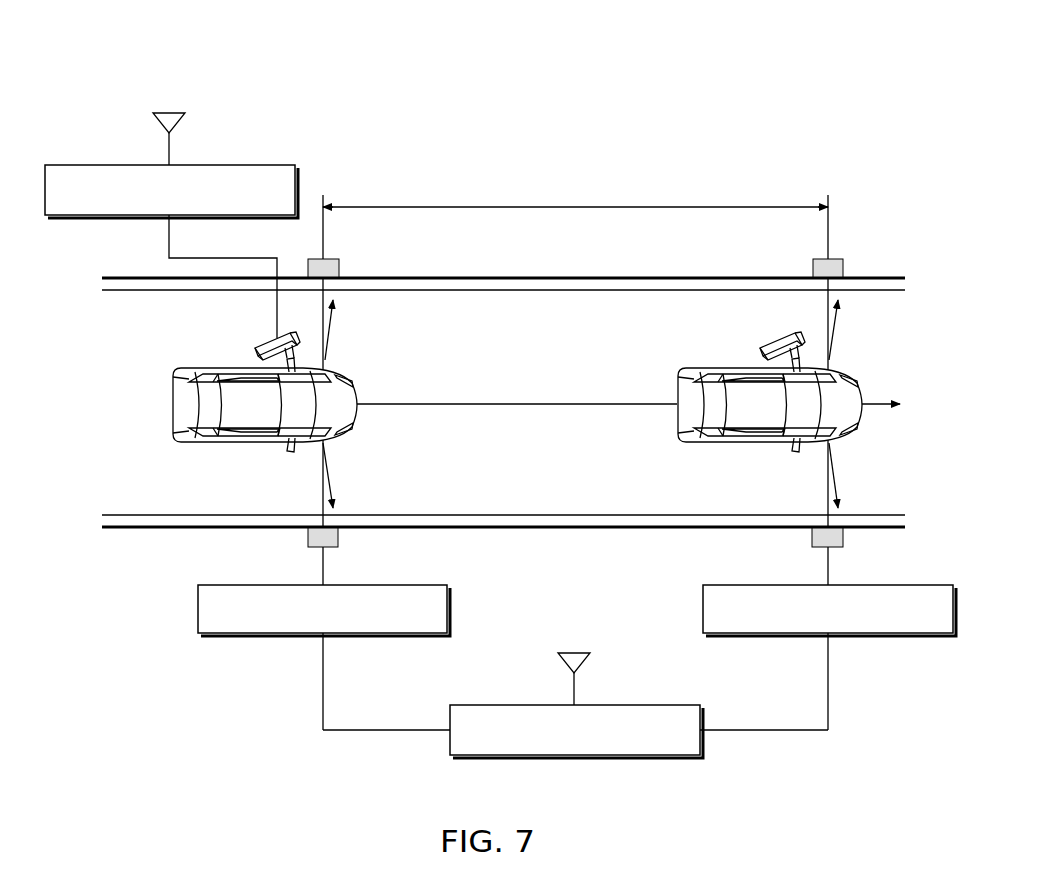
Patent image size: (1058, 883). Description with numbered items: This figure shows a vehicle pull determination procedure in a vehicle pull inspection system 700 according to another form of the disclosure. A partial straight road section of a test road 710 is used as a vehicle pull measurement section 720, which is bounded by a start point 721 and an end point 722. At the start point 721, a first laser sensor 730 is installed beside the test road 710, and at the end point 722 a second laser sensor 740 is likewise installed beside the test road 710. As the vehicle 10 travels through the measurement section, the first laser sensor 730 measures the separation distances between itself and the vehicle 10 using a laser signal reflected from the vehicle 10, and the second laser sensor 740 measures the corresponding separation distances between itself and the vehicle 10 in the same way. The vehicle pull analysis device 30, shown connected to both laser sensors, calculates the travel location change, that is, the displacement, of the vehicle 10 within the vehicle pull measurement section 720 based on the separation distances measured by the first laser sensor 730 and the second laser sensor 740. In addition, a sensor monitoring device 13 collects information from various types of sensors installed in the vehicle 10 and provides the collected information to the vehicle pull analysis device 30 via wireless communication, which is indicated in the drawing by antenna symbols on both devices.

The vehicle pull measurement system 700 is at (349, 61).
The sensor monitoring device 13 is at (260, 163).
The vehicle 10 is at (203, 426).
The test road 710 is at (133, 478).
The vehicle pull measurement section 720 is at (583, 208).
The start point 721 is at (339, 268).
The end point 722 is at (843, 268).
The first laser sensor 730 is at (447, 610).
The second laser sensor 740 is at (703, 610).
The vehicle pull analysis device 30 is at (672, 704).